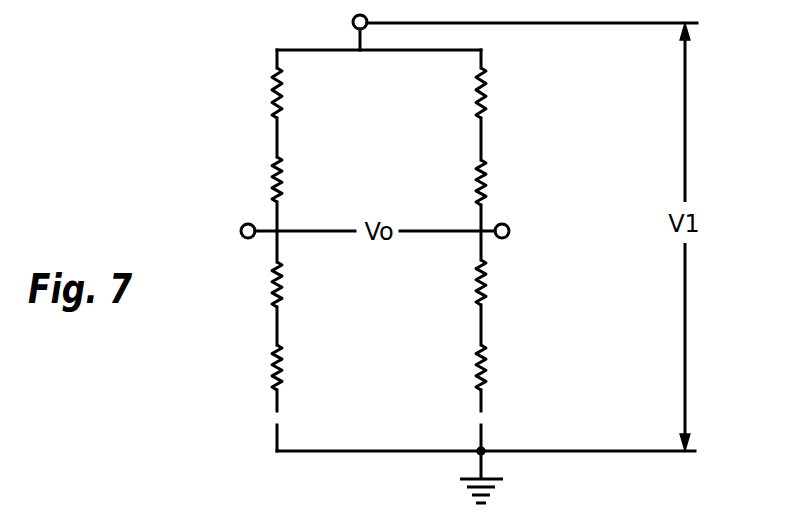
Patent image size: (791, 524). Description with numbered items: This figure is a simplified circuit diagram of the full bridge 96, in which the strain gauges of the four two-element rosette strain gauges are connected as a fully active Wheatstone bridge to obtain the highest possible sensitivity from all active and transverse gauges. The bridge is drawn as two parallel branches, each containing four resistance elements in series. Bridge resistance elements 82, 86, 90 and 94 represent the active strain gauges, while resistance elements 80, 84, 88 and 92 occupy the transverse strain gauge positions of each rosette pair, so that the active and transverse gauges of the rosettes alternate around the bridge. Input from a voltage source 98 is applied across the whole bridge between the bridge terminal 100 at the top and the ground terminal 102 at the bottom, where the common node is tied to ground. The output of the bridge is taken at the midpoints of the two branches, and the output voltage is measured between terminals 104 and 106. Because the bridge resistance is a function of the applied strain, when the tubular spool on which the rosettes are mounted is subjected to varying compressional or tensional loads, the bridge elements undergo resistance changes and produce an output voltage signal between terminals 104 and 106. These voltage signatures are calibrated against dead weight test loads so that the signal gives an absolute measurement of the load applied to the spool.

The bridge resistance element 80 is at (485, 293).
The bridge resistance element 82 is at (485, 184).
The bridge resistance element 84 is at (272, 183).
The bridge resistance element 86 is at (272, 293).
The bridge resistance element 88 is at (272, 100).
The bridge resistance element 90 is at (272, 375).
The bridge resistance element 92 is at (485, 378).
The bridge resistance element 94 is at (485, 100).
The full bridge 96 is at (300, 50).
The voltage source 98 is at (685, 250).
The bridge terminal 100 is at (352, 21).
The ground terminal 102 is at (484, 452).
The terminal 104 is at (240, 231).
The terminal 106 is at (510, 232).